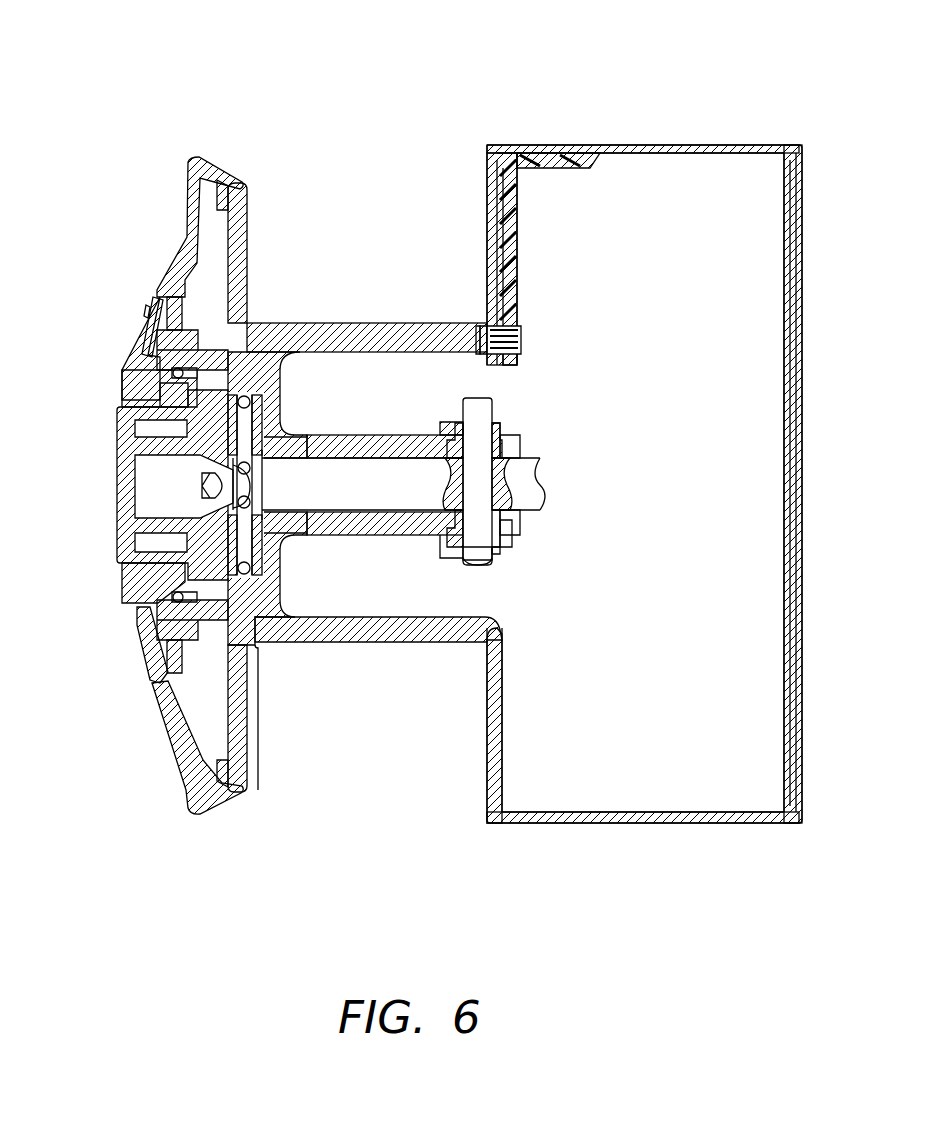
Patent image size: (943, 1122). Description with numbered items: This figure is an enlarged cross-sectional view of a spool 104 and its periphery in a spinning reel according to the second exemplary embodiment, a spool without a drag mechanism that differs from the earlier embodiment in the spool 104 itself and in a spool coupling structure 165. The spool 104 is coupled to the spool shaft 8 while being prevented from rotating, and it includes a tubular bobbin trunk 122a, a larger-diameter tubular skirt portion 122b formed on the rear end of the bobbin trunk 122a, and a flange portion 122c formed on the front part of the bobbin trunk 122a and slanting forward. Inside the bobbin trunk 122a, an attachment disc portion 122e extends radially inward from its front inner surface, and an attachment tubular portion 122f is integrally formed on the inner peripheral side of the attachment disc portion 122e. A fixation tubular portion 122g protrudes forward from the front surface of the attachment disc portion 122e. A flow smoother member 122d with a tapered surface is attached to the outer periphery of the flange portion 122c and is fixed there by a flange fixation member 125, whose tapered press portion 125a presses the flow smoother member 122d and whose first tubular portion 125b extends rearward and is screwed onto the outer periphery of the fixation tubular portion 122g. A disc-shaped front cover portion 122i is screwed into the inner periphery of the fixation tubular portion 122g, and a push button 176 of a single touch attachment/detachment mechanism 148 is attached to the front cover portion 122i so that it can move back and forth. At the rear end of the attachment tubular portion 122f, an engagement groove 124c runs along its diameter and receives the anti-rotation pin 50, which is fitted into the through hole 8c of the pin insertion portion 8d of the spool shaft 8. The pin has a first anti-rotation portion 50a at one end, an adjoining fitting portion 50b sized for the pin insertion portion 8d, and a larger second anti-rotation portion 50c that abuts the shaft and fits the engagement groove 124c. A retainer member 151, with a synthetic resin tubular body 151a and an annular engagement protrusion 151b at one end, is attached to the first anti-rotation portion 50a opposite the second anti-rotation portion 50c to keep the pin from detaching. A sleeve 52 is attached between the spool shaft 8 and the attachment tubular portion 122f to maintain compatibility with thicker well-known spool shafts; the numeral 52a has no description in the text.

The spool 104 is at (410, 676).
The skirt portion 122b is at (605, 150).
The flange portion 122c is at (253, 210).
The bobbin trunk 122a is at (370, 325).
The attachment disc portion 122e is at (300, 350).
The attachment tubular portion 122f is at (345, 525).
The flow smoother member 122d is at (218, 160).
The single touch attachment/detachment mechanism 148 is at (118, 440).
The push button 176 is at (118, 462).
The spool shaft 8 is at (372, 460).
The through hole 8c is at (505, 542).
The pin insertion portion 8d is at (495, 432).
The sleeve 52 is at (397, 445).
The anti-rotation pin 50 is at (505, 440).
The first anti-rotation portion 50a is at (455, 544).
The fitting portion 50b is at (540, 484).
The second anti-rotation portion 50c is at (528, 360).
The spool coupling structure 165 is at (470, 378).
The engagement groove 124c is at (505, 445).
The bar lower end 52a is at (520, 500).
The retainer member 151 is at (465, 560).
The tubular body 151a is at (515, 528).
The engagement protrusion 151b is at (498, 562).
The flange fixation member 125 is at (185, 165).
The press portion 125a is at (184, 232).
The first tubular portion 125b is at (173, 268).
The fixation tubular portion 122g is at (160, 338).
The front cover portion 122i is at (150, 630).